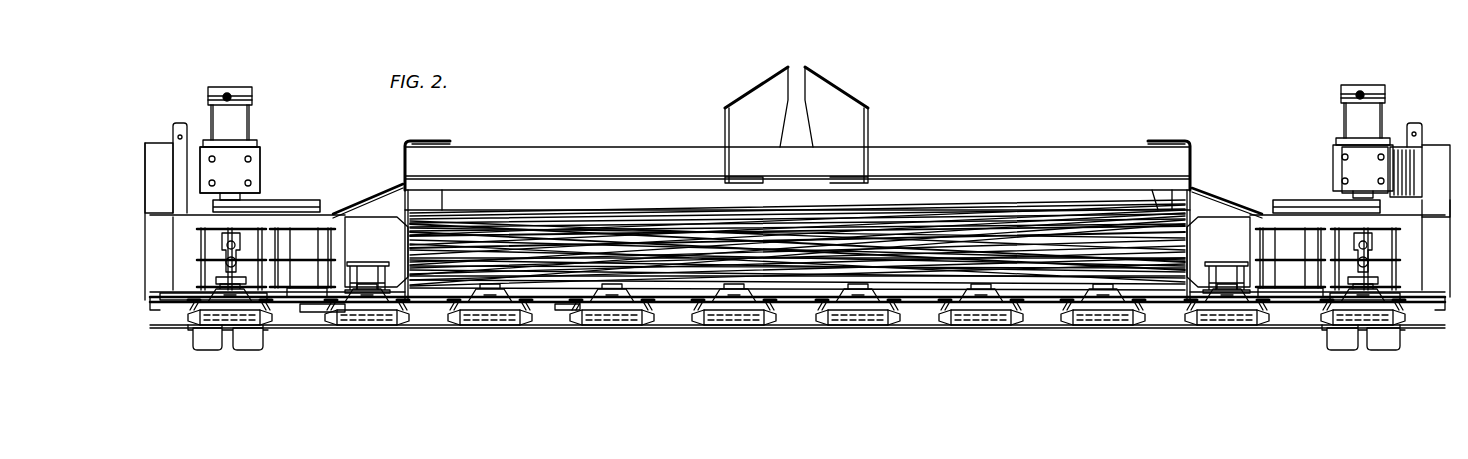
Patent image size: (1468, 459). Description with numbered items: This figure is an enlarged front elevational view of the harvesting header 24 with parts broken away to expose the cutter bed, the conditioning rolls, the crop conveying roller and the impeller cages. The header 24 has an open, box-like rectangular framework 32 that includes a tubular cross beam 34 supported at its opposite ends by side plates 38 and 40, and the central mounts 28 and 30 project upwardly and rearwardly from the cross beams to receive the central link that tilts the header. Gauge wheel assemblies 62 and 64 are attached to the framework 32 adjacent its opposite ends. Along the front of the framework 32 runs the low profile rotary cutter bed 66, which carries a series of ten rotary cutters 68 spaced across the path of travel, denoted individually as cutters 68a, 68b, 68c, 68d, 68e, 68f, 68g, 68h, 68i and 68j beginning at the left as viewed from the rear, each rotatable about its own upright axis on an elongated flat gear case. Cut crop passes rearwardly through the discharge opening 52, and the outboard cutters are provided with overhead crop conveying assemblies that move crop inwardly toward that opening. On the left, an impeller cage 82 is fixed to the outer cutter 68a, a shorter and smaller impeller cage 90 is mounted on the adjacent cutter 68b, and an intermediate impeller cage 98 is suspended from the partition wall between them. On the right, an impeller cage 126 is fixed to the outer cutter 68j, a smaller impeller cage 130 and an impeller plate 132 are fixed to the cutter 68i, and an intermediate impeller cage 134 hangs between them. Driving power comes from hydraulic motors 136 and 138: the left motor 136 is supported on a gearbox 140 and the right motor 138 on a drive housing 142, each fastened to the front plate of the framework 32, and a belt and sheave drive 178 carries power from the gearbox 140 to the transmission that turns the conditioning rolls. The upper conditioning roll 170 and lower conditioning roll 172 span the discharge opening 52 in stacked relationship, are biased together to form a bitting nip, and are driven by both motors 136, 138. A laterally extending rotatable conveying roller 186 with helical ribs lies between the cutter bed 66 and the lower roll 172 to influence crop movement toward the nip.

The harvesting header 24 is at (1180, 133).
The central mount 28 is at (840, 90).
The central mount 30 is at (770, 73).
The header framework 32 is at (500, 135).
The tubular cross beam 34 is at (655, 157).
The side plate 38 is at (1192, 148).
The side plate 40 is at (403, 145).
The discharge opening 52 is at (1102, 207).
The gauge wheel assembly 62 is at (1386, 348).
The gauge wheel assembly 64 is at (200, 341).
The cutter bed 66 is at (1043, 326).
The rotary cutter 68 is at (893, 329).
The rotary cutter 68a is at (1314, 305).
The rotary cutter 68b is at (1265, 305).
The rotary cutter 68c is at (1140, 305).
The rotary cutter 68d is at (985, 300).
The rotary cutter 68e is at (842, 305).
The rotary cutter 68f is at (750, 300).
The rotary cutter 68g is at (630, 305).
The rotary cutter 68h is at (520, 325).
The rotary cutter 68i is at (388, 300).
The rotary cutter 68j is at (245, 305).
The impeller cage 82 is at (1390, 248).
The impeller cage 90 is at (1224, 262).
The intermediate impeller cage 98 is at (1243, 217).
The impeller cage 126 is at (205, 250).
The impeller cage 130 is at (370, 262).
The impeller plate 132 is at (330, 320).
The intermediate impeller cage 134 is at (338, 212).
The hydraulic motor 136 is at (1363, 88).
The hydraulic motor 138 is at (229, 92).
The gearbox 140 is at (1350, 167).
The drive housing 142 is at (255, 160).
The upper crop conditioning roll 170 is at (975, 235).
The lower crop conditioning roll 172 is at (557, 273).
The belt and sheave drive 178 is at (1398, 148).
The crop conveying roller 186 is at (567, 300).